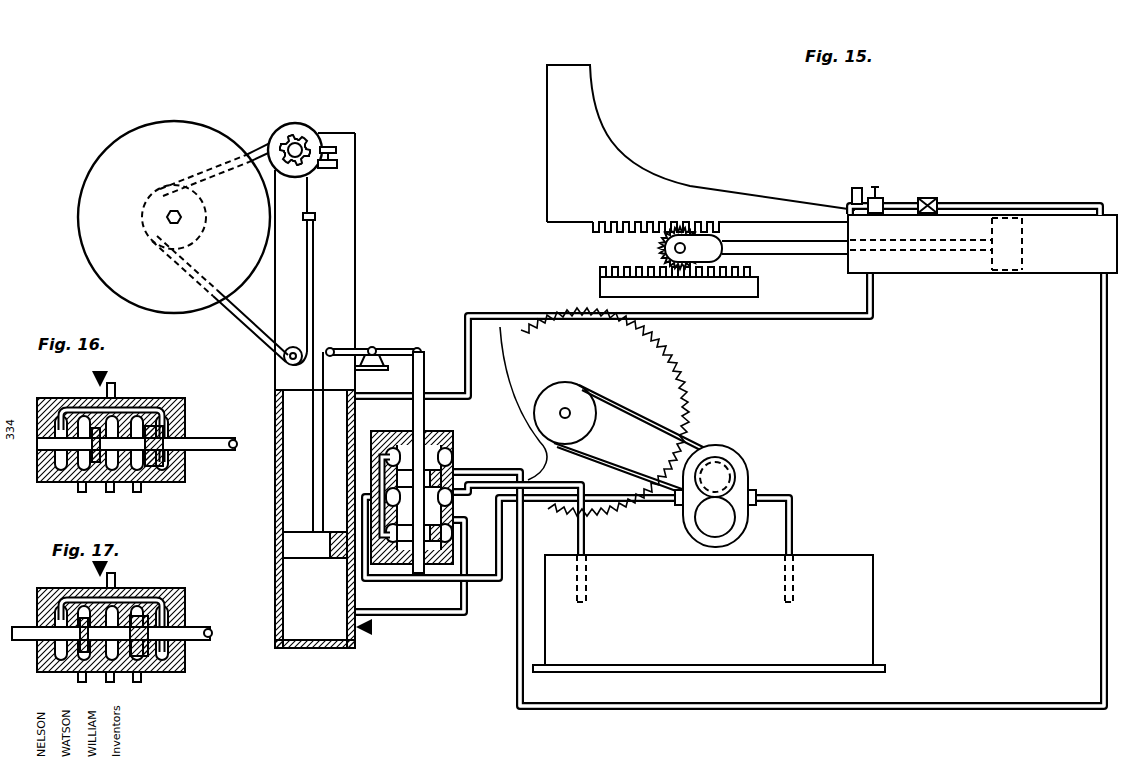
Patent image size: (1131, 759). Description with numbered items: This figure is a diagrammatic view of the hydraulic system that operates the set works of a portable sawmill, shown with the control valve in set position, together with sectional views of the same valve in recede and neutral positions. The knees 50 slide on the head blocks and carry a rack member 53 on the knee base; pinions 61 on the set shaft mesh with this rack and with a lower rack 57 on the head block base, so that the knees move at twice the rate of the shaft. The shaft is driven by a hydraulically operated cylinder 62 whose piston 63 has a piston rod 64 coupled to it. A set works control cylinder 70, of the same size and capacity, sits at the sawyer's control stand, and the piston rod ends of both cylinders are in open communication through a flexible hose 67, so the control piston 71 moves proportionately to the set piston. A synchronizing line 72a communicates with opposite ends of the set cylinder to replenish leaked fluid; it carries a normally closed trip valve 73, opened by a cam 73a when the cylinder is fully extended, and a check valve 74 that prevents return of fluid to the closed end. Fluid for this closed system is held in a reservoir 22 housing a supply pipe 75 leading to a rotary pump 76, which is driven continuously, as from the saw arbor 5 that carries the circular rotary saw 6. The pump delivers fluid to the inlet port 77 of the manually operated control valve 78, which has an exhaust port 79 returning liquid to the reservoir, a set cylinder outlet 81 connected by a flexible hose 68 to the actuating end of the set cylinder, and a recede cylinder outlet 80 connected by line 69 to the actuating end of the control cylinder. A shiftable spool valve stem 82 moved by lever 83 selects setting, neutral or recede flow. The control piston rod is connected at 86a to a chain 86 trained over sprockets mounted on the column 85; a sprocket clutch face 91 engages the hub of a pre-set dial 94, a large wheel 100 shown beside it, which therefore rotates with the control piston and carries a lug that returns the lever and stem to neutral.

In FIG. 15, the saw arbor 5 is at (569, 411).
In FIG. 15, the circular rotary saw 6 is at (648, 368).
In FIG. 15, the reservoir 22 is at (709, 613).
In FIG. 15, the knees 50 is at (612, 157).
In FIG. 15, the rack member 53 is at (628, 222).
In FIG. 15, the rack 57 is at (617, 283).
In FIG. 15, the pinions 61 is at (683, 228).
In FIG. 15, the hydraulically operated cylinder 62 is at (970, 274).
In FIG. 15, the piston 63 is at (1012, 232).
In FIG. 15, the piston rod 64 is at (830, 256).
In FIG. 15, the flexible hose 67 is at (612, 334).
In FIG. 15, the flexible hose 68 is at (540, 708).
In FIG. 15, the line 69 is at (448, 612).
In FIG. 15, the set works control cylinder 70 is at (277, 491).
In FIG. 15, the piston 71 is at (315, 455).
In FIG. 15, the synchronizing line 72a is at (937, 222).
In FIG. 15, the trip valve 73 is at (877, 190).
In FIG. 15, the cam 73a is at (852, 193).
In FIG. 15, the check valve 74 is at (929, 198).
In FIG. 15, the supply pipe 75 is at (795, 498).
In FIG. 15, the rotary pump 76 is at (750, 472).
In FIG. 16, the rotary pump 76 is at (186, 421).
In FIG. 15, the inlet port 77 is at (365, 495).
In FIG. 16, the inlet port 77 is at (116, 398).
In FIG. 17, the inlet port 77 is at (116, 588).
In FIG. 15, the control valve 78 is at (453, 438).
In FIG. 17, the control valve 78 is at (186, 608).
In FIG. 15, the exhaust port 79 is at (503, 470).
In FIG. 16, the exhaust port 79 is at (110, 493).
In FIG. 17, the exhaust port 79 is at (112, 683).
In FIG. 15, the recede cylinder outlet 80 is at (440, 498).
In FIG. 16, the recede cylinder outlet 80 is at (80, 492).
In FIG. 15, the set cylinder outlet 81 is at (454, 458).
In FIG. 16, the set cylinder outlet 81 is at (140, 492).
In FIG. 17, the set cylinder outlet 81 is at (142, 680).
In FIG. 15, the spool valve stem 82 is at (425, 409).
In FIG. 15, the lever 83 is at (393, 349).
In FIG. 15, the column 85 is at (357, 300).
In FIG. 15, the chain 86 is at (246, 316).
In FIG. 15, the connection 86a is at (316, 217).
In FIG. 15, the clutch face 91 is at (308, 133).
In FIG. 15, the pre-set dial 94 is at (282, 133).
In FIG. 15, the wheel 100 is at (174, 217).